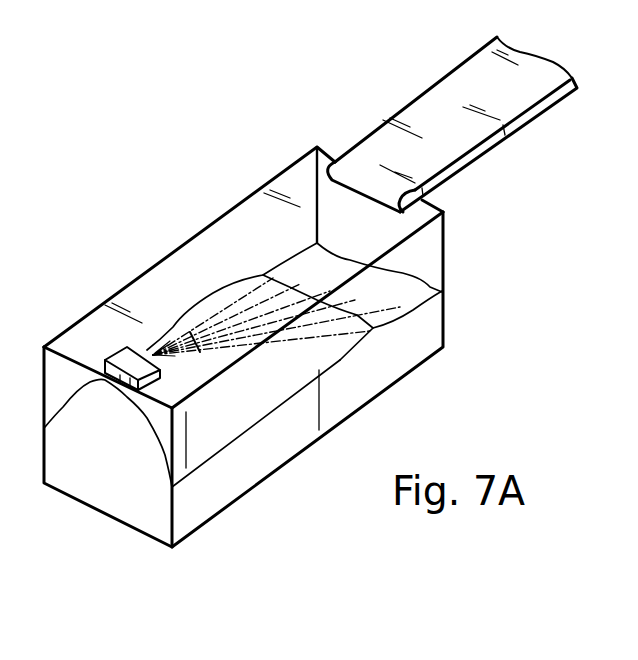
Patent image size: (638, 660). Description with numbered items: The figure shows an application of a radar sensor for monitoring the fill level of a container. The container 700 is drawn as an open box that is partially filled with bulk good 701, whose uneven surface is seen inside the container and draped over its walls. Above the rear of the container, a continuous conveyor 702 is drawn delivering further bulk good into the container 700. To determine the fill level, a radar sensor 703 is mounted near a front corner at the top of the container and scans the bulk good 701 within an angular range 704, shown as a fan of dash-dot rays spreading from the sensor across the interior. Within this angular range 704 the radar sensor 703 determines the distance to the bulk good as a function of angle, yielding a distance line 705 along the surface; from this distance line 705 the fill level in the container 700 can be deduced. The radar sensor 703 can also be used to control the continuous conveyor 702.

The container 700 is at (310, 291).
The bulk good 701 is at (430, 336).
The continuous conveyor 702 is at (430, 105).
The radar sensor 703 is at (120, 378).
The angular range 704 is at (200, 338).
The distance line 705 is at (360, 313).